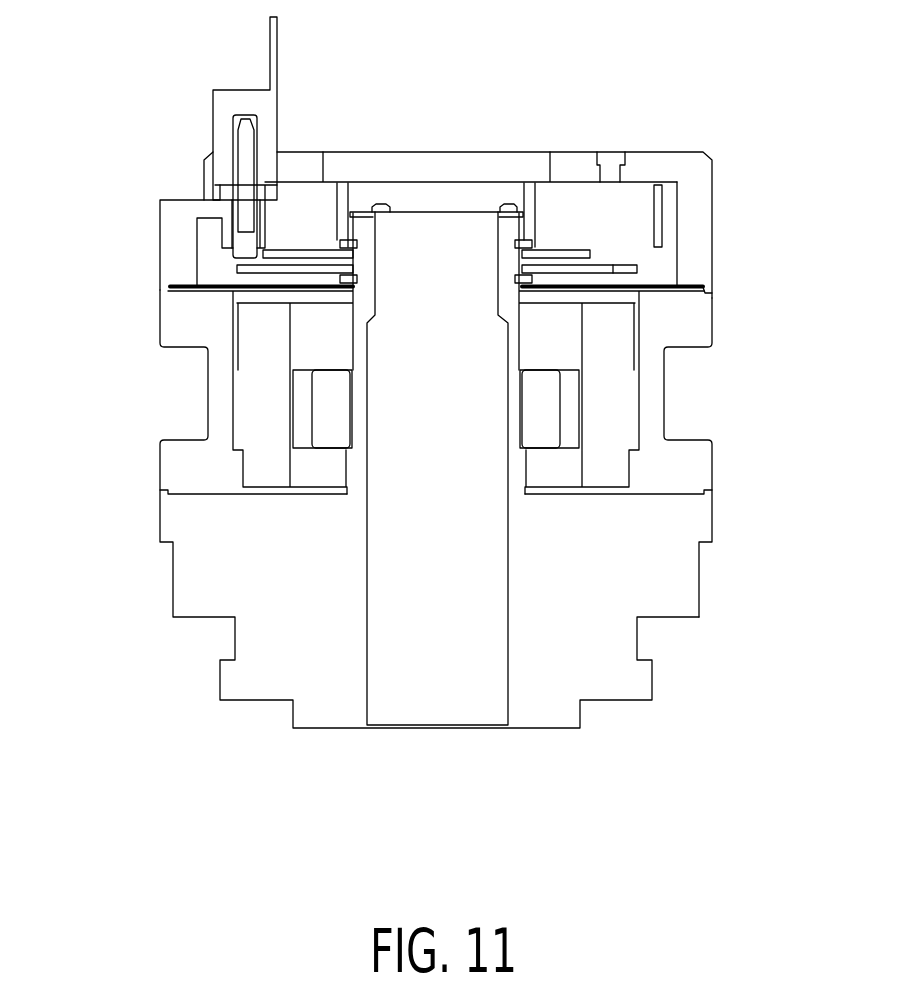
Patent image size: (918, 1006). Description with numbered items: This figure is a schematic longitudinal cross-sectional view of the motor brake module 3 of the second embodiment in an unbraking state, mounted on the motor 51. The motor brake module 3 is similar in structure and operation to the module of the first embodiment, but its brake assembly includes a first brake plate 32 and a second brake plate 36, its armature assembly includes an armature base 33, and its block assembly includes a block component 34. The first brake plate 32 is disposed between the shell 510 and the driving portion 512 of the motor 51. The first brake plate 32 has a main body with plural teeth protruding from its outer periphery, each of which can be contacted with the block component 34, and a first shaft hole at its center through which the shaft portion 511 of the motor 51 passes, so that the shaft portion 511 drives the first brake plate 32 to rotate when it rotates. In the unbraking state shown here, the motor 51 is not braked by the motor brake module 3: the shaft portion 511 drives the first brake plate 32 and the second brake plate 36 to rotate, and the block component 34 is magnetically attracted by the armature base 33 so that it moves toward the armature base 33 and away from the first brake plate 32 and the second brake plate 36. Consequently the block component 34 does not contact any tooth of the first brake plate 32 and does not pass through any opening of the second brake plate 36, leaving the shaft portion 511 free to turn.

The motor brake module 3 is at (95, 244).
The first brake plate 32 is at (570, 253).
The armature base 33 is at (263, 108).
The block component 34 is at (243, 140).
The second brake plate 36 is at (623, 265).
The motor 51 is at (424, 509).
The shell 510 is at (683, 177).
The shaft portion 511 is at (433, 678).
The driving portion 512 is at (675, 535).